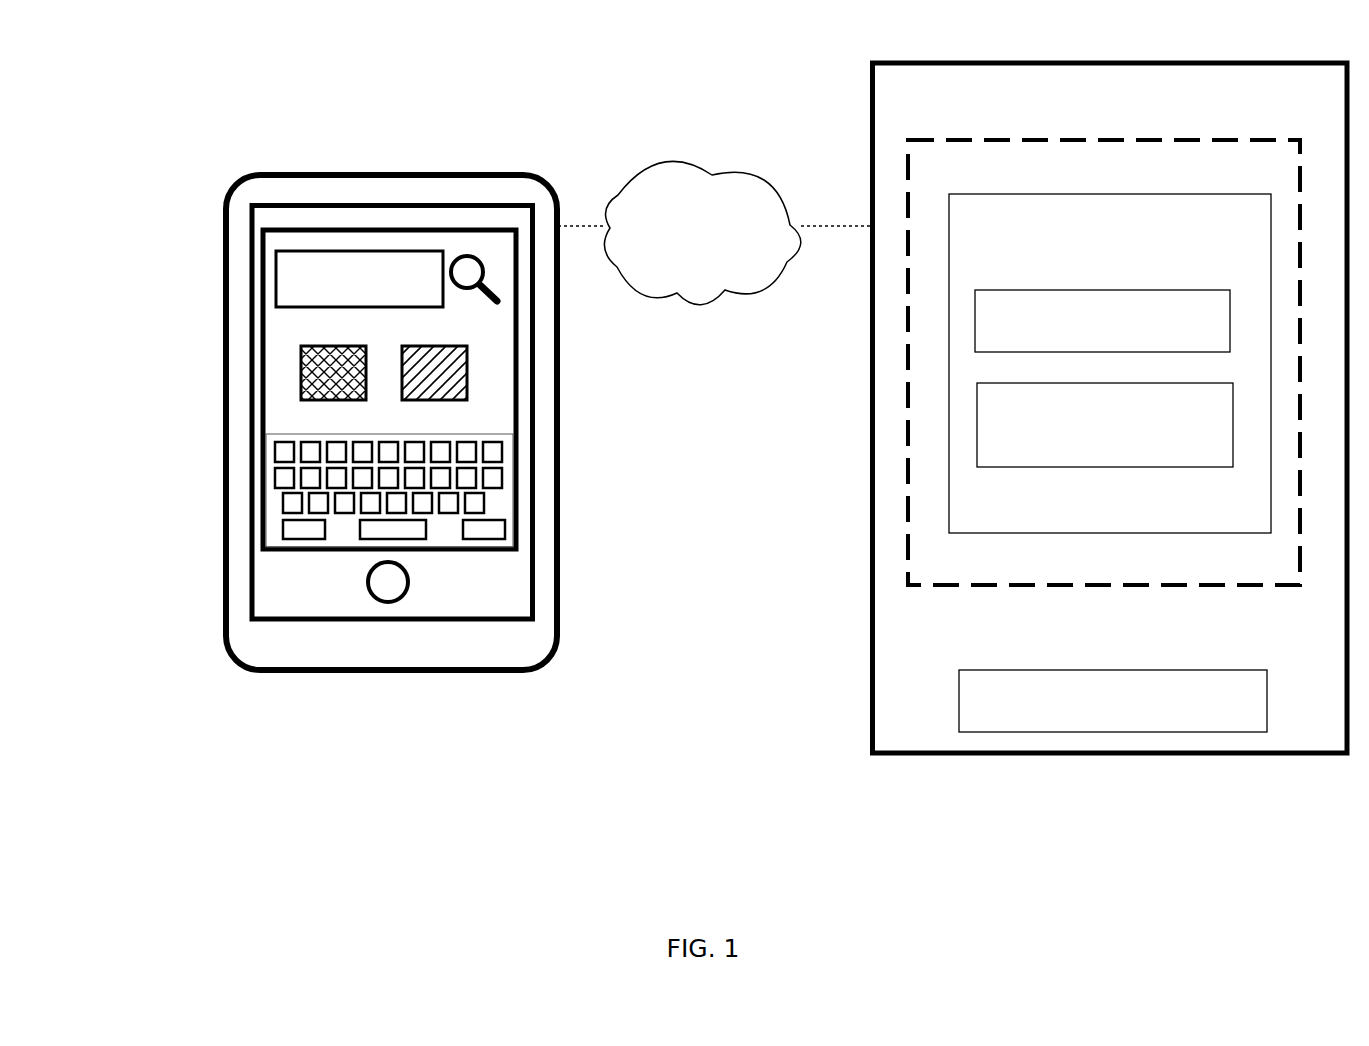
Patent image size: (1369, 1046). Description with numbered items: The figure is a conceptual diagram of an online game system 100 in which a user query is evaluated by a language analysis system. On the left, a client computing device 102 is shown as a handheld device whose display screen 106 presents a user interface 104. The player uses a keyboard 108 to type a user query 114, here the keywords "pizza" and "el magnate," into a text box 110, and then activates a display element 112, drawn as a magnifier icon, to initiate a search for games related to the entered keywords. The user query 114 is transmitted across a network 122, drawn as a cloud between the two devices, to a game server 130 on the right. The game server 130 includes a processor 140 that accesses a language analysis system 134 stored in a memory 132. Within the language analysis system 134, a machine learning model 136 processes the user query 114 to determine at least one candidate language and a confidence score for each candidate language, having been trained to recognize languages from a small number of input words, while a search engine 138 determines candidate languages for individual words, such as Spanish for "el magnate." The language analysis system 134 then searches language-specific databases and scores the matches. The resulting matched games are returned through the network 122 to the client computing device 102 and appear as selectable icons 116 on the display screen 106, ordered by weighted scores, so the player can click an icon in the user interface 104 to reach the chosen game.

The online game system 100 is at (350, 702).
The client computing device 102 is at (327, 172).
The user interface 104 is at (262, 288).
The display screen 106 is at (460, 203).
The keyboard 108 is at (275, 475).
The text box 110 is at (290, 253).
The display element 112 is at (488, 258).
The user query 114 is at (333, 268).
The selectable icons 116 is at (301, 368).
The network 122 is at (687, 260).
The game server 130 is at (870, 135).
The memory 132 is at (1104, 362).
The language analysis system 134 is at (1197, 513).
The machine learning model 136 is at (1161, 464).
The search engine 138 is at (1156, 348).
The processor 140 is at (1113, 701).